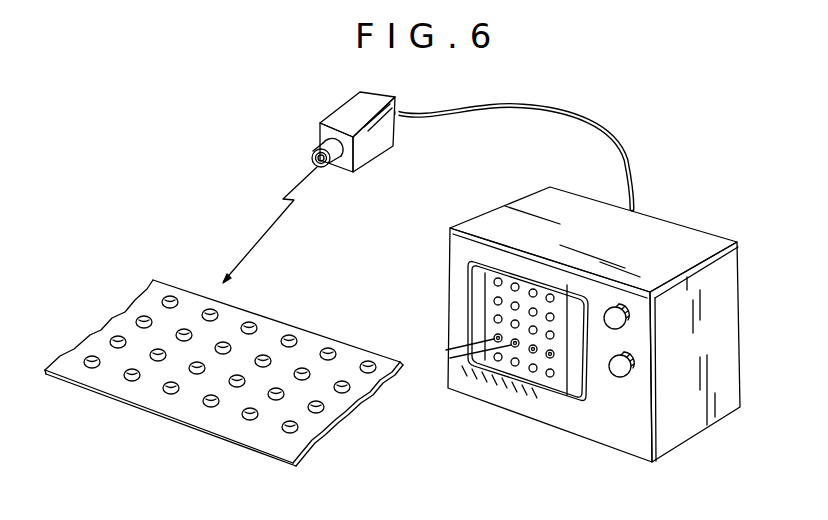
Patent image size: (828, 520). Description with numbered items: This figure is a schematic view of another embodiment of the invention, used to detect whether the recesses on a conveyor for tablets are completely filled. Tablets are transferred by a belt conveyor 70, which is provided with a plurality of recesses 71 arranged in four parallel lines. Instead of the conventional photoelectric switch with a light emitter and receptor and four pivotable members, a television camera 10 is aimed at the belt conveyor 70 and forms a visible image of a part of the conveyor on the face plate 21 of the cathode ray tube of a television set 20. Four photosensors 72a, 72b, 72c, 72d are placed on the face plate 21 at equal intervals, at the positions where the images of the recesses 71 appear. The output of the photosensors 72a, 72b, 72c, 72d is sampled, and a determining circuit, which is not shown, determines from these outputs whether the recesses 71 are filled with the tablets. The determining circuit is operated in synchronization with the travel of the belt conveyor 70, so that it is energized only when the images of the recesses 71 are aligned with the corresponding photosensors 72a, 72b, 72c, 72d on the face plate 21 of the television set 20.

The television camera 10 is at (340, 112).
The television set 20 is at (673, 230).
The face plate 21 is at (573, 307).
The belt conveyor 70 is at (224, 378).
The recesses 71 is at (292, 336).
The photosensor 72a is at (494, 337).
The photosensor 72b is at (513, 340).
The photosensor 72c is at (534, 346).
The photosensor 72d is at (554, 355).